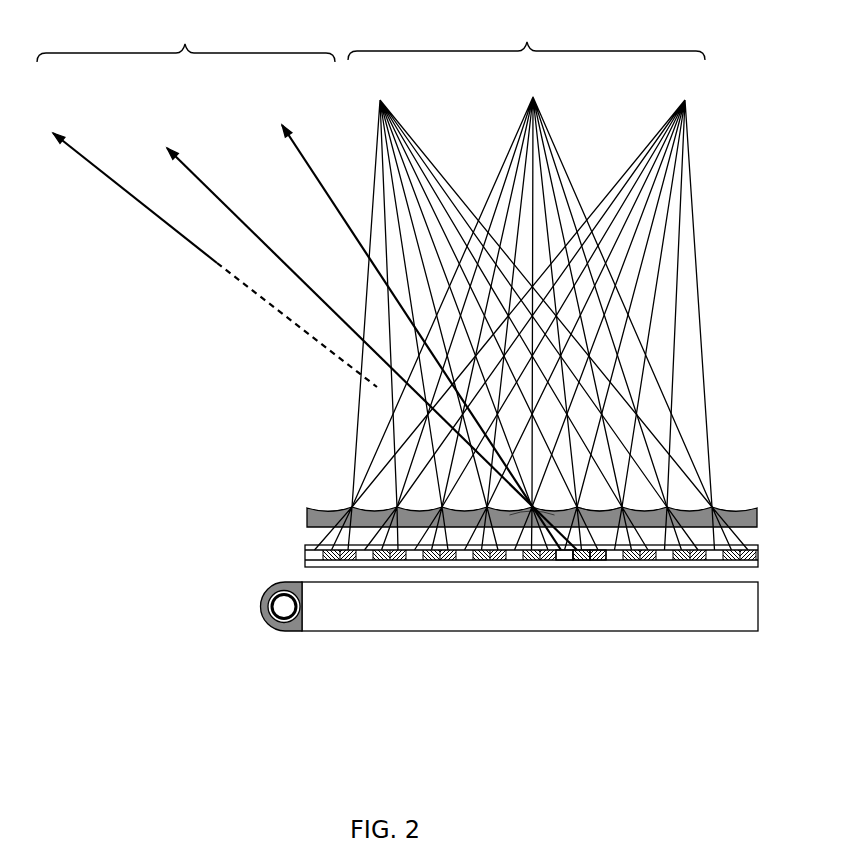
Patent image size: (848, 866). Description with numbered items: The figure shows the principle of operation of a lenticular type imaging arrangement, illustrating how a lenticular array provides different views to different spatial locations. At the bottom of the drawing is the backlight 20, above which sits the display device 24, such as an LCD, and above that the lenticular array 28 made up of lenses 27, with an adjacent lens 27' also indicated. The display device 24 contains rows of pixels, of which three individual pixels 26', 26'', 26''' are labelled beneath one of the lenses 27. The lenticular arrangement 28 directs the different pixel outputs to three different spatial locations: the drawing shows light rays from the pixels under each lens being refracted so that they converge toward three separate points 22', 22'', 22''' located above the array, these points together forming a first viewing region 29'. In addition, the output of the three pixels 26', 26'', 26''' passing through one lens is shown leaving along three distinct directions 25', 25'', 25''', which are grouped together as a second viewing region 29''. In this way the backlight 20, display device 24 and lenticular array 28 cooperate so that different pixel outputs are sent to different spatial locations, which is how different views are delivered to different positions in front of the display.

The backlight 20 is at (764, 607).
The first viewing zone convergence point 22' is at (532, 286).
The second viewing zone convergence point 22'' is at (532, 286).
The third viewing zone convergence point 22''' is at (529, 286).
The display device 24 is at (764, 556).
The first deflected ray direction 25' is at (403, 317).
The second deflected ray direction 25'' is at (358, 317).
The third deflected ray direction 25''' is at (202, 235).
The first pixel 26' is at (589, 616).
The second pixel 26'' is at (627, 615).
The third pixel 26''' is at (667, 614).
The lens 27 is at (683, 457).
The adjacent lens 27' is at (393, 460).
The lenticular array 28 is at (764, 518).
The first viewing region 29' is at (526, 33).
The second viewing region 29'' is at (186, 34).